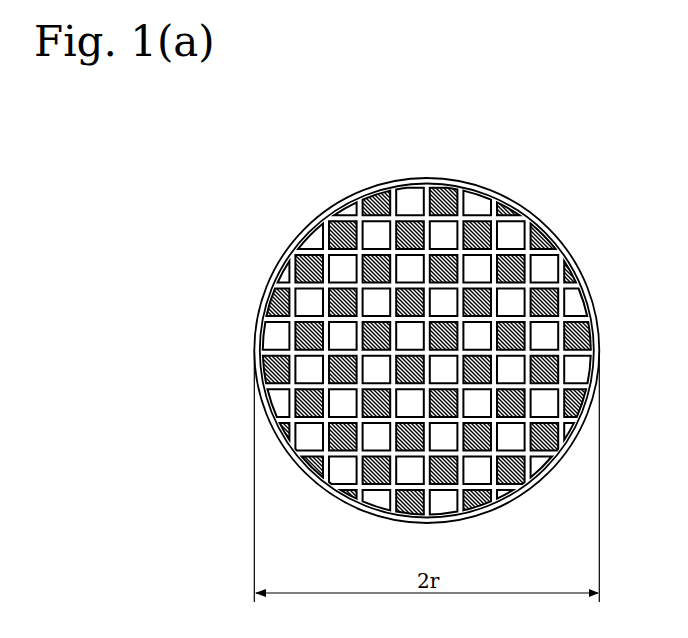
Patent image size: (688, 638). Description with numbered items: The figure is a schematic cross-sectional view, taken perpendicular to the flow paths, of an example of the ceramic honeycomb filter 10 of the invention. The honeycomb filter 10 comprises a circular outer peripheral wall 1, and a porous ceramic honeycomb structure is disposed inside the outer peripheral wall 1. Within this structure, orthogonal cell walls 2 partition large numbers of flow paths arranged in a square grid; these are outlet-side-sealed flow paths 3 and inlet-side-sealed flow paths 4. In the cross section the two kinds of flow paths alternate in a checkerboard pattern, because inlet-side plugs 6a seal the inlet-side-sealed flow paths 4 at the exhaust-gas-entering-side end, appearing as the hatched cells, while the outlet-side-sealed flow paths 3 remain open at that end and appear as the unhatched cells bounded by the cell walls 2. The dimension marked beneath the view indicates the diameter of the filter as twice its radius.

The honeycomb filter 10 is at (255, 163).
The outer peripheral wall 1 is at (339, 201).
The cell walls 2 is at (410, 216).
The outlet-side-sealed flow paths 3 is at (480, 268).
The inlet-side-sealed flow paths 4 is at (480, 238).
The inlet-side plugs 6a is at (480, 226).